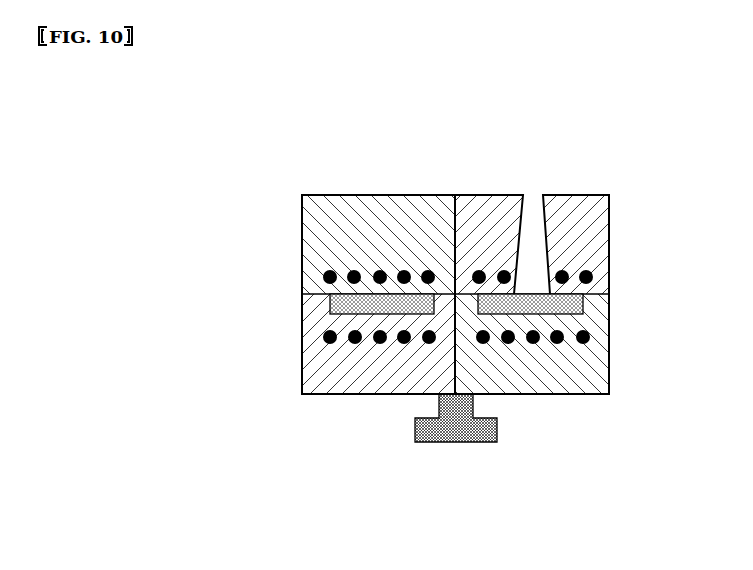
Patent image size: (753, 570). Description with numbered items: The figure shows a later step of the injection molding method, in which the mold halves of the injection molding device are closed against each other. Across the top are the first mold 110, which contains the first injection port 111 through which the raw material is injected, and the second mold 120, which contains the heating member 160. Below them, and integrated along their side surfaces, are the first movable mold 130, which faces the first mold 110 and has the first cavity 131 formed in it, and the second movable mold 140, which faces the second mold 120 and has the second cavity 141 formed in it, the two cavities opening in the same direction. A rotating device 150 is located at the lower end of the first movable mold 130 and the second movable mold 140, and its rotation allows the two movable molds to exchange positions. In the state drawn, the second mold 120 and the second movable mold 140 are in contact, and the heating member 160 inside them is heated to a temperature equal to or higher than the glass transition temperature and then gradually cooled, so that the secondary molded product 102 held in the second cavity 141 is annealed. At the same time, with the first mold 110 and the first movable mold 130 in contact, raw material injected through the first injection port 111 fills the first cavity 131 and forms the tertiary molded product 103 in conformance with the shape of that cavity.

The first mold 110 is at (579, 195).
The first injection port 111 is at (520, 222).
The second mold 120 is at (371, 195).
The secondary molded product 102 is at (342, 306).
The tertiary molded product 103 is at (574, 305).
The first movable mold 130 is at (609, 348).
The first cavity 131 is at (528, 312).
The second movable mold 140 is at (302, 350).
The second cavity 141 is at (383, 305).
The rotating device 150 is at (455, 444).
The heating member 160 is at (444, 332).